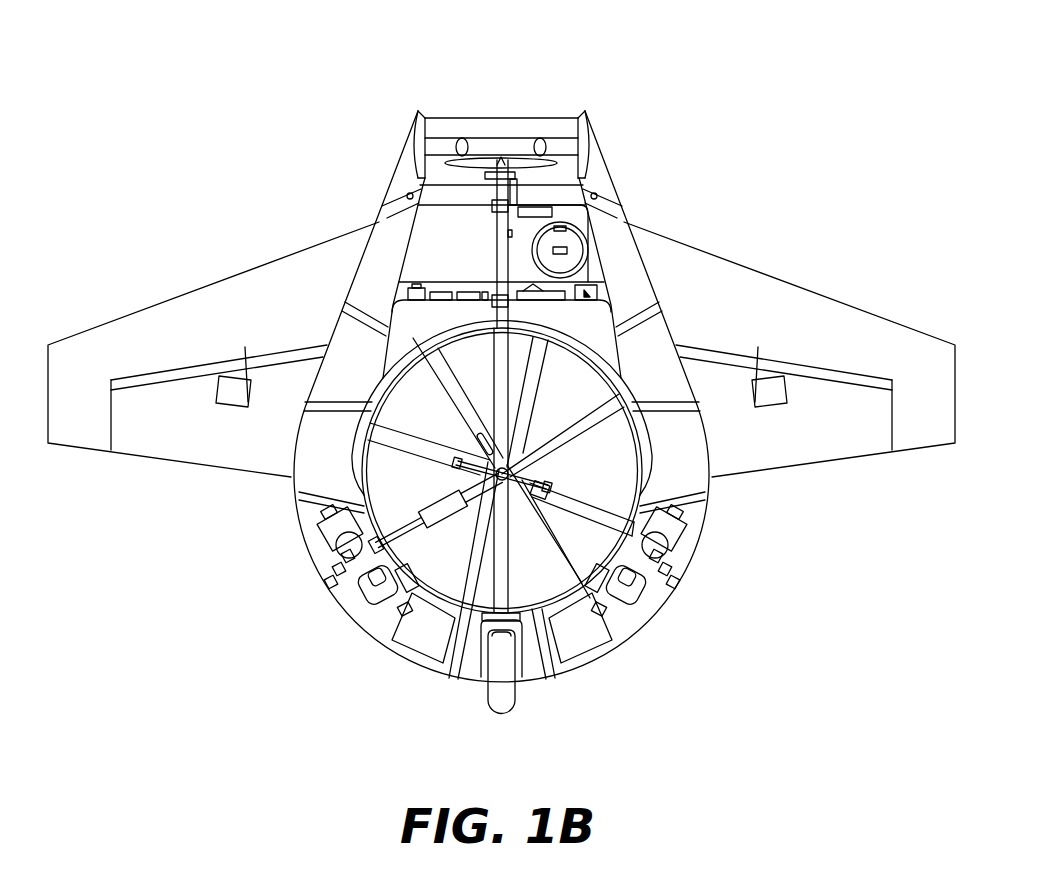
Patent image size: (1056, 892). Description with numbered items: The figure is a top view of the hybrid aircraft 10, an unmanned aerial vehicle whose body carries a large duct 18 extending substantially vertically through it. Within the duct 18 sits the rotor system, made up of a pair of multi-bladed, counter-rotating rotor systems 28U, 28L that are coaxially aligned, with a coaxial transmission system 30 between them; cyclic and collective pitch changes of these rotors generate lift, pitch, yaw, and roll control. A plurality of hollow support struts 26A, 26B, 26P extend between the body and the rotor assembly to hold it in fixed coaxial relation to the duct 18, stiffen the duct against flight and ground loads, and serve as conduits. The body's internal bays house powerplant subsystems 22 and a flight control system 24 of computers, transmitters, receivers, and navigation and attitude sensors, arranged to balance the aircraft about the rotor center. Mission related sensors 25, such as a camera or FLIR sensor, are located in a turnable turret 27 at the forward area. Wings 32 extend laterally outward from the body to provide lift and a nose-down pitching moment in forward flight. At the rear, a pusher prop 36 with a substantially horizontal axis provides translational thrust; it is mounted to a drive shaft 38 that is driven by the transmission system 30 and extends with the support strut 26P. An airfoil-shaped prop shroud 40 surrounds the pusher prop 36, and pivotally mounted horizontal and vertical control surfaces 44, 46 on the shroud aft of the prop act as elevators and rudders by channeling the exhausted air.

The hybrid aircraft 10 is at (610, 76).
The duct 18 is at (578, 369).
The powerplant subsystems 22 is at (655, 550).
The flight control system 24 is at (590, 254).
The mission related sensors 25 is at (502, 708).
The support strut 26A is at (593, 517).
The support strut 26B is at (455, 488).
The support strut 26P is at (440, 353).
The turnable turret 27 is at (492, 692).
The lower counter-rotating rotor system 28L is at (543, 550).
The upper counter-rotating rotor system 28U is at (413, 440).
The coaxial transmission system 30 is at (546, 471).
The wing 32 is at (941, 396).
The pusher prop 36 is at (560, 138).
The drive shaft 38 is at (497, 242).
The prop shroud 40 is at (415, 148).
The horizontal control surfaces 44 is at (452, 138).
The vertical control surfaces 46 is at (468, 140).